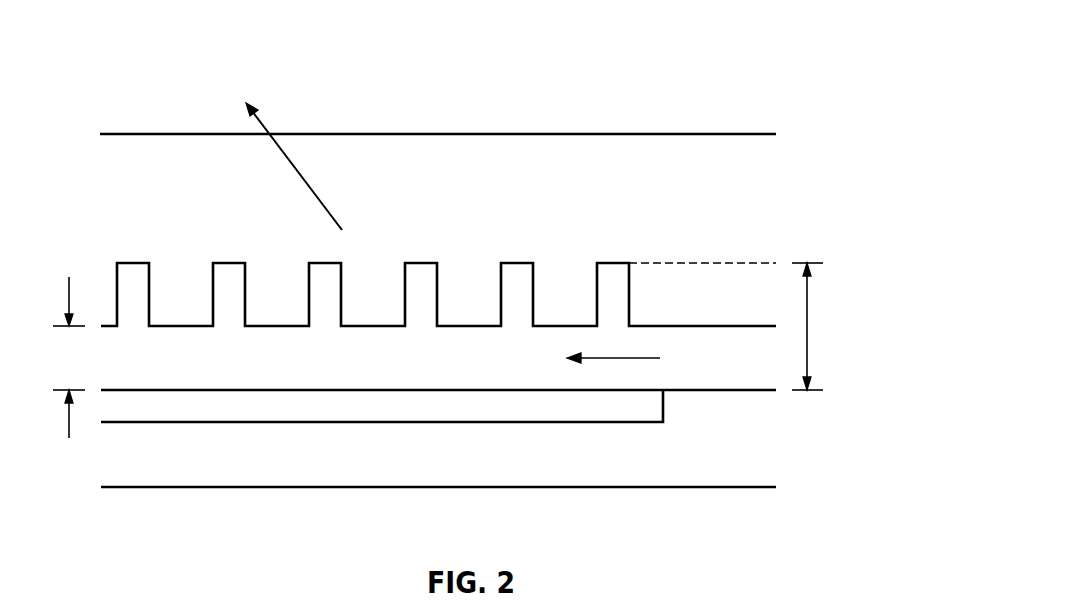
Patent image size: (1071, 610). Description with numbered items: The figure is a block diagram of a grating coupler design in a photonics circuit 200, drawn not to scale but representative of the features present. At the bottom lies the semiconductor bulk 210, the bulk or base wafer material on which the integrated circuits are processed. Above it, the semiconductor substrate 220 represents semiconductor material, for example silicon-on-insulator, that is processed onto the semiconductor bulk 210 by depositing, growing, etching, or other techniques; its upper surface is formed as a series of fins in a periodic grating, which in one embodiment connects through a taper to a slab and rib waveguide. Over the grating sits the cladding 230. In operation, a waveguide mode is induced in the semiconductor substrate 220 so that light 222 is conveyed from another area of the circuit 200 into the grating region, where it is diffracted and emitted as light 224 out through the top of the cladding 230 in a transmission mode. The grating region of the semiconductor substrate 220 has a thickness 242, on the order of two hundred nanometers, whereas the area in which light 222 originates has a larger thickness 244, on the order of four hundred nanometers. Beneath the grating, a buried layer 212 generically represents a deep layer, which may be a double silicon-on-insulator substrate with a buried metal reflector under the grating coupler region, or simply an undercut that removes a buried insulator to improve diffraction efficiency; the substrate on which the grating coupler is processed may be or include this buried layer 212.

The circuit 200 is at (774, 78).
The cladding 230 is at (500, 191).
The light 224 is at (288, 208).
The semiconductor substrate 220 is at (462, 366).
The light 222 is at (754, 367).
The thickness 244 is at (891, 310).
The buried layer 212 is at (457, 415).
The thickness 242 is at (192, 463).
The semiconductor bulk 210 is at (753, 464).